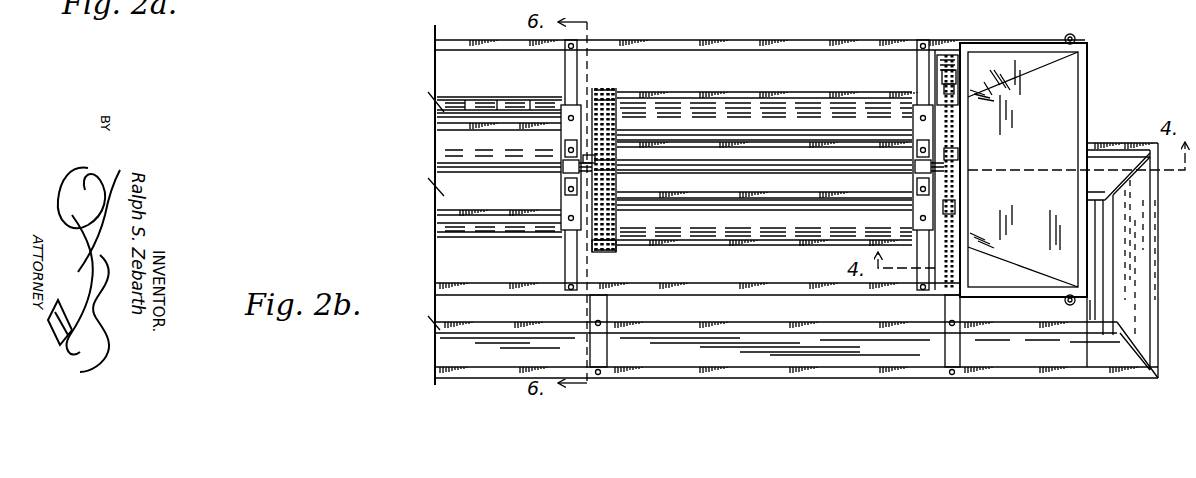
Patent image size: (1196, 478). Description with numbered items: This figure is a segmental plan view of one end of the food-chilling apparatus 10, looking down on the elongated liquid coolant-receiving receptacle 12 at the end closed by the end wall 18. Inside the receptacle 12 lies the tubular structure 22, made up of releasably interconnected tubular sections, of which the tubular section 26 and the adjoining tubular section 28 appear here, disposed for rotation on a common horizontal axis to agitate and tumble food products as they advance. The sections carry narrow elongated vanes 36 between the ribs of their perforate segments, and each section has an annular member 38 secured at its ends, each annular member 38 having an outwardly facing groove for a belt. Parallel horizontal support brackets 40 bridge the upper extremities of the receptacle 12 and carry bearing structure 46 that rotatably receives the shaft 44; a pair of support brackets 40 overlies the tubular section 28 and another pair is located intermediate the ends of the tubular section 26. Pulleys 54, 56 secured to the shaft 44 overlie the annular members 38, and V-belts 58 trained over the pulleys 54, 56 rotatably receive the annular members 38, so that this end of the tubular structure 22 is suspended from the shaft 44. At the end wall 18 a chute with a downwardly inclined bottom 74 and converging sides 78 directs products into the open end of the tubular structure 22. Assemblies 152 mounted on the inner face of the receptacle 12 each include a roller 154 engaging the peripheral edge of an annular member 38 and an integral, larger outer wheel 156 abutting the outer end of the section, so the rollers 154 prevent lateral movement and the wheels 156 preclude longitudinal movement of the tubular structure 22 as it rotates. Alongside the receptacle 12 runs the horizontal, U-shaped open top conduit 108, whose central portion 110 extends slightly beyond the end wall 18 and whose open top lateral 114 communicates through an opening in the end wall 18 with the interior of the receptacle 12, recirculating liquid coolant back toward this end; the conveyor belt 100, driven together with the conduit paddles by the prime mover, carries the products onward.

The apparatus 10 is at (433, 141).
The liquid coolant-receiving receptacle 12 is at (690, 37).
The end wall 18 is at (1090, 66).
The tubular structure 22 is at (600, 88).
The tubular section 26 is at (491, 95).
The tubular section 28 is at (690, 94).
The vanes 36 is at (768, 96).
The annular member 38 is at (614, 90).
The support brackets 40 is at (571, 58).
The shaft 44 is at (742, 170).
The bearing structure 46 is at (565, 172).
The pulley 54 is at (597, 158).
The pulley 56 is at (609, 252).
The V-belts 58 is at (945, 208).
The bottom 74 is at (1063, 107).
The sides 78 is at (985, 58).
The conveyor belt 100 is at (926, 145).
The open top conduit 108 is at (708, 316).
The central portion 110 is at (708, 372).
The lateral 114 is at (1157, 273).
The assemblies 152 is at (950, 70).
The roller 154 is at (948, 68).
The outer wheel 156 is at (955, 76).